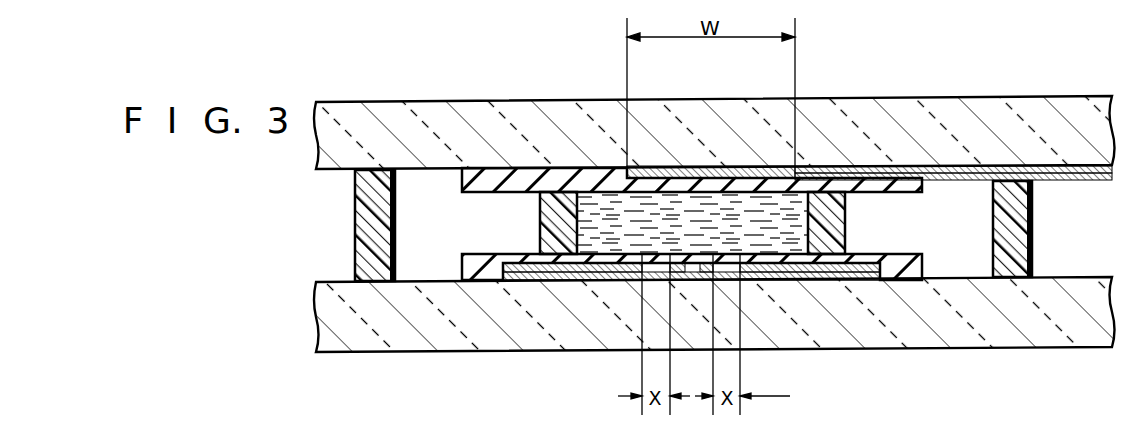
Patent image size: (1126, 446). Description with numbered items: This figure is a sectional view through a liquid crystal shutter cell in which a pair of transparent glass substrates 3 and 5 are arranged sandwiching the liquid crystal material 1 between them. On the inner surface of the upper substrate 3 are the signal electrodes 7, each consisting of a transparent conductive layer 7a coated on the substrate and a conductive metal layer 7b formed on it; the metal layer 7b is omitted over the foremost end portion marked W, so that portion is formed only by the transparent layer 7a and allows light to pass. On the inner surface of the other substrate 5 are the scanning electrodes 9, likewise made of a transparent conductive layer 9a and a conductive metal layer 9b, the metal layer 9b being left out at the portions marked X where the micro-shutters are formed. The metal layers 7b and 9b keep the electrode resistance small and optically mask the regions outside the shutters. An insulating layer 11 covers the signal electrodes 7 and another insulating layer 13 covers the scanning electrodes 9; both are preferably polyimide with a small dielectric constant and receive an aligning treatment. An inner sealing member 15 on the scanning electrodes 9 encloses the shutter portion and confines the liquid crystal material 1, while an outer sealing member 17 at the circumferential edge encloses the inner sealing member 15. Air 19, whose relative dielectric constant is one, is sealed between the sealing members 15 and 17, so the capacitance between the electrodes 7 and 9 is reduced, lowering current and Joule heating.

The liquid crystal material 1 is at (605, 210).
The transparent substrate 3 is at (984, 105).
The transparent substrate 5 is at (953, 338).
The signal electrode 7 is at (1031, 158).
The transparent conductive layer 7a is at (703, 165).
The conductive metal layer 7b is at (858, 172).
The scanning electrode 9 is at (518, 290).
The transparent conductive layer 9a is at (593, 281).
The conductive metal layer 9b is at (541, 279).
The insulating layer 11 is at (490, 172).
The insulating layer 13 is at (487, 275).
The inner sealing member 15 is at (540, 216).
The outer sealing member 17 is at (358, 240).
The air 19 is at (390, 200).